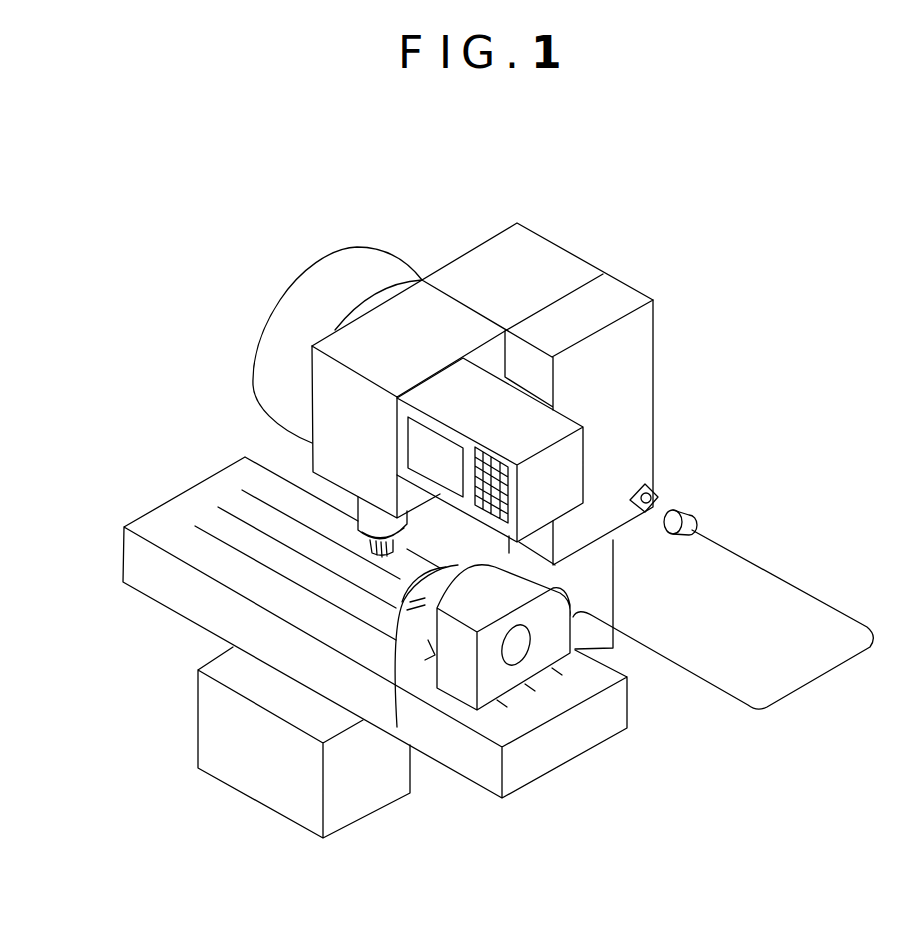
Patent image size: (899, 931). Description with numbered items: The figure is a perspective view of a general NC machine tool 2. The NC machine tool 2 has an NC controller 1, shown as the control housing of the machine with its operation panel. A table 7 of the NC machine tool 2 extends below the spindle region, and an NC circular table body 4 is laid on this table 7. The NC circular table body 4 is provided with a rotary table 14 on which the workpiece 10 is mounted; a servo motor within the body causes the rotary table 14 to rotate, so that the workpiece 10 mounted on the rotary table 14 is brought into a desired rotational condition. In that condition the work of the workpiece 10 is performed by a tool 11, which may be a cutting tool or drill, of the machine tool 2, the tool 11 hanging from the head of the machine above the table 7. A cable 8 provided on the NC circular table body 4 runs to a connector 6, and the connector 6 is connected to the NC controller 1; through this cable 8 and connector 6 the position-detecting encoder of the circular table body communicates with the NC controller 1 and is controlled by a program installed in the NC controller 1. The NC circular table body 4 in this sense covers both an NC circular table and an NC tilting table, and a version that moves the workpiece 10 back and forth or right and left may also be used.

The NC controller 1 is at (643, 382).
The NC machine tool 2 is at (591, 236).
The NC circular table body 4 is at (552, 653).
The connector 6 is at (684, 512).
The table 7 is at (184, 518).
The cable 8 is at (840, 672).
The workpiece 10 is at (397, 727).
The tool 11 is at (352, 532).
The rotary table 14 is at (432, 612).